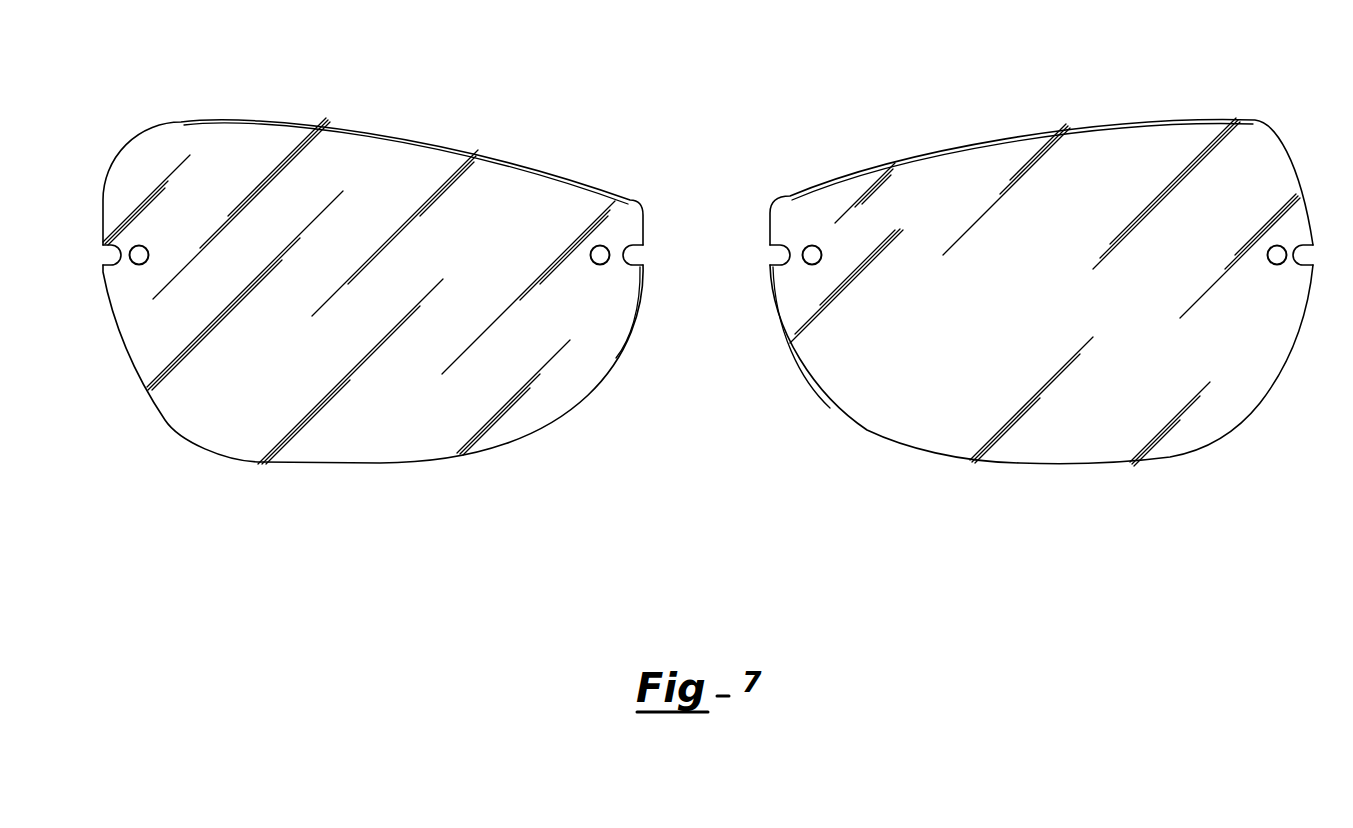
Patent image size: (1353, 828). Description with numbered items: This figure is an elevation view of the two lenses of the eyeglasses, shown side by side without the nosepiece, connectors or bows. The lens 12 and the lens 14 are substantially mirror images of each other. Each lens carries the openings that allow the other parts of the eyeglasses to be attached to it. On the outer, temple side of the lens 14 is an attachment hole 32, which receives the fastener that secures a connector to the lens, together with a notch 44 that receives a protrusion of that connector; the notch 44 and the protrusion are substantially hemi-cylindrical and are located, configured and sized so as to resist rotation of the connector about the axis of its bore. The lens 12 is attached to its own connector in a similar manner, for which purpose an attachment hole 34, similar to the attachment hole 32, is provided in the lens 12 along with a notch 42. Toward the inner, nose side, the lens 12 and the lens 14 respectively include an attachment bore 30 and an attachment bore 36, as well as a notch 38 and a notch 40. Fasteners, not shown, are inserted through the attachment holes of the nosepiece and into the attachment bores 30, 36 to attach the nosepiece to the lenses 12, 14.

The lens 12 is at (337, 123).
The lens 14 is at (1105, 121).
The attachment bore 30 is at (600, 251).
The attachment hole 32 is at (1277, 247).
The attachment hole 34 is at (139, 246).
The attachment bore 36 is at (812, 246).
The notch 38 is at (635, 253).
The notch 40 is at (770, 255).
The notch 42 is at (103, 247).
The notch 44 is at (1312, 255).